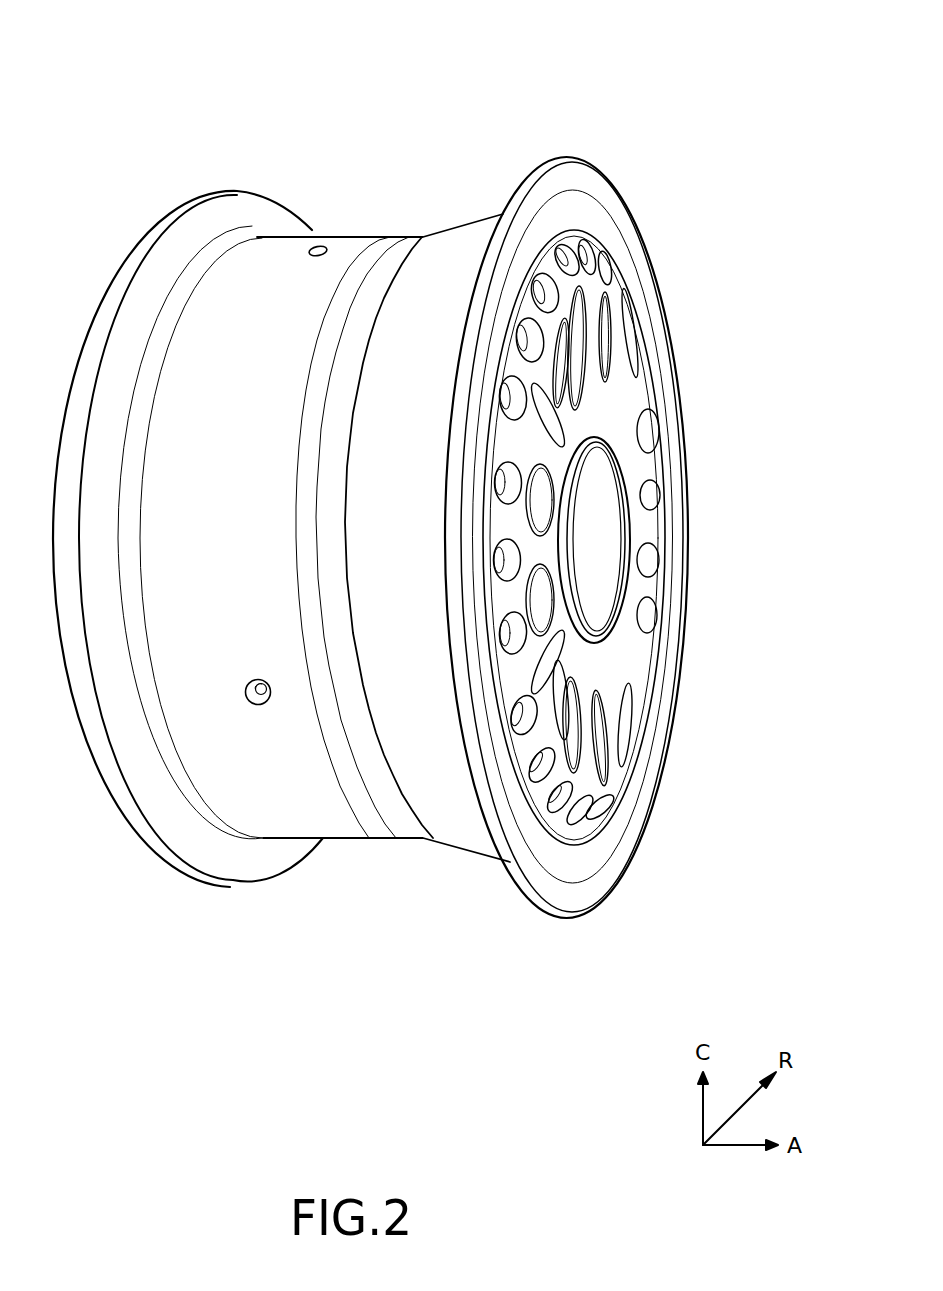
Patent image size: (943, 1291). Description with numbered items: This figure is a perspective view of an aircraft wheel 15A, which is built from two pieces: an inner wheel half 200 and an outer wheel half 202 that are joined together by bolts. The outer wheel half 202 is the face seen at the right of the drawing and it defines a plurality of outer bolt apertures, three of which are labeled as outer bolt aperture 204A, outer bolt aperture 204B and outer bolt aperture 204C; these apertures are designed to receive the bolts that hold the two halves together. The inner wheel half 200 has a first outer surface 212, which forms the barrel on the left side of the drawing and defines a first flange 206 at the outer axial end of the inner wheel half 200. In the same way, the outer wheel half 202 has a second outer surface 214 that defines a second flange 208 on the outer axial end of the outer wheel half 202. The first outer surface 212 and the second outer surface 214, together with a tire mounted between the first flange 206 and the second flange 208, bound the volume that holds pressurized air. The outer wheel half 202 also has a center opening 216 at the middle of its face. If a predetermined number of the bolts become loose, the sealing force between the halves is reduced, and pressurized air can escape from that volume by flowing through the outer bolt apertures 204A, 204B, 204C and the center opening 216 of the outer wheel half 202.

The wheel 15A is at (141, 76).
The inner wheel half 200 is at (168, 413).
The outer wheel half 202 is at (623, 215).
The outer bolt aperture 204A is at (523, 407).
The outer bolt aperture 204B is at (537, 350).
The outer bolt aperture 204C is at (552, 305).
The first flange 206 is at (138, 250).
The second flange 208 is at (557, 908).
The first outer surface 212 is at (280, 727).
The second outer surface 214 is at (427, 765).
The center opening 216 is at (590, 540).